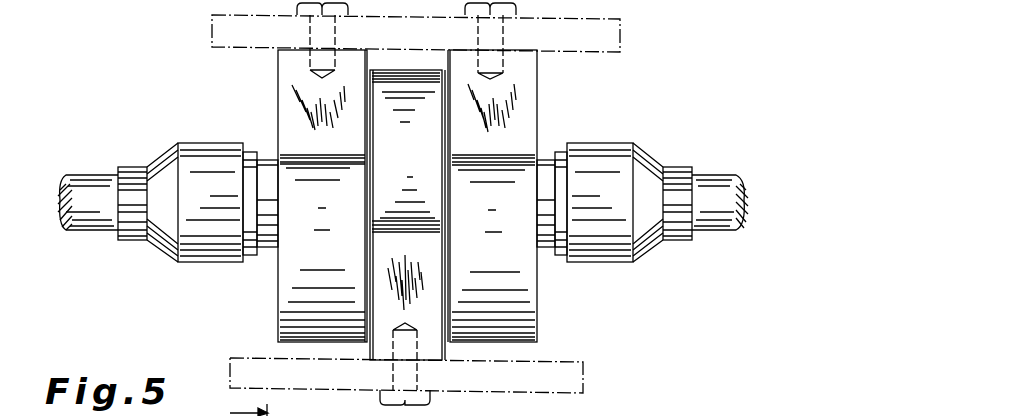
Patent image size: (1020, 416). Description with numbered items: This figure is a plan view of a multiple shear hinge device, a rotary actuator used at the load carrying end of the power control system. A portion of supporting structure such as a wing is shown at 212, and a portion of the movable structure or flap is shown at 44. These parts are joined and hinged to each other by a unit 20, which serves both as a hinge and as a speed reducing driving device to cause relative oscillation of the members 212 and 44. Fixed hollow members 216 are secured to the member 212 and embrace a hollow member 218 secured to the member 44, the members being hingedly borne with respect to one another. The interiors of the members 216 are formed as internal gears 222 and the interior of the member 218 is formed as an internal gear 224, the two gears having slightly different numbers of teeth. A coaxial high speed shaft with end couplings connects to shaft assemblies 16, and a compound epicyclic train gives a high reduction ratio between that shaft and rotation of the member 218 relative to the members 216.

The shaft assemblies 16 is at (86, 244).
The unit 20 is at (554, 137).
The movable structure or flap 44 is at (585, 371).
The supporting structure 212 is at (622, 43).
The fixed hollow members 216 is at (278, 103).
The hollow member 218 is at (442, 148).
The internal gears 222 is at (328, 209).
The internal gear 224 is at (405, 369).